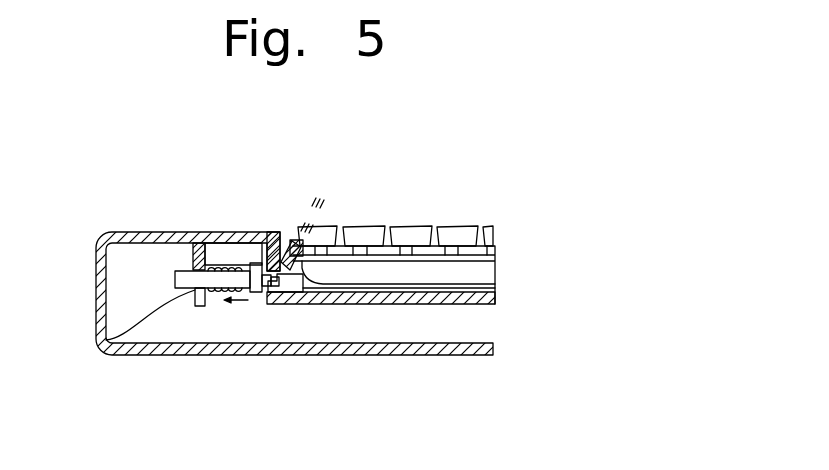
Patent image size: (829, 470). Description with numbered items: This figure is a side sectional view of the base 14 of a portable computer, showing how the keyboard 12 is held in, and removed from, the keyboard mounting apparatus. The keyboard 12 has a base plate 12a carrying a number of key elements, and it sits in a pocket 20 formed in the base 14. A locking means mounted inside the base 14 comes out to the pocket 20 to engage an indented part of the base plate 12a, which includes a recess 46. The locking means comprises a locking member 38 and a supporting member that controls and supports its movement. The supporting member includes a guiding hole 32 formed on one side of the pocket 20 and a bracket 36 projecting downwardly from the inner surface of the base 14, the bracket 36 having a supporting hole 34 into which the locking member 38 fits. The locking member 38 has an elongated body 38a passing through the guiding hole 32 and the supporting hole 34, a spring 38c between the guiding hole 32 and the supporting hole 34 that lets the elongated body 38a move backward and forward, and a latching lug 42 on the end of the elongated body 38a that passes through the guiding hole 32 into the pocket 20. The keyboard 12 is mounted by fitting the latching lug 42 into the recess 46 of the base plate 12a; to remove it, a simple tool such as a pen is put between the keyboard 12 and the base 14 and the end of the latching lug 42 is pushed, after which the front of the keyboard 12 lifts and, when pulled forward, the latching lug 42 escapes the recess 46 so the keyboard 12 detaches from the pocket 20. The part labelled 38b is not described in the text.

The keyboard 12 is at (414, 214).
The base plate 12a is at (495, 303).
The base 14 is at (257, 232).
The pocket 20 is at (402, 289).
The guiding hole 32 is at (280, 293).
The supporting hole 34 is at (195, 268).
The bracket 36 is at (104, 344).
The locking member 38 is at (233, 250).
The elongated body 38a is at (232, 285).
The flange 38b is at (271, 232).
The spring 38c is at (216, 293).
The latching lug 42 is at (288, 266).
The recess 46 is at (318, 292).